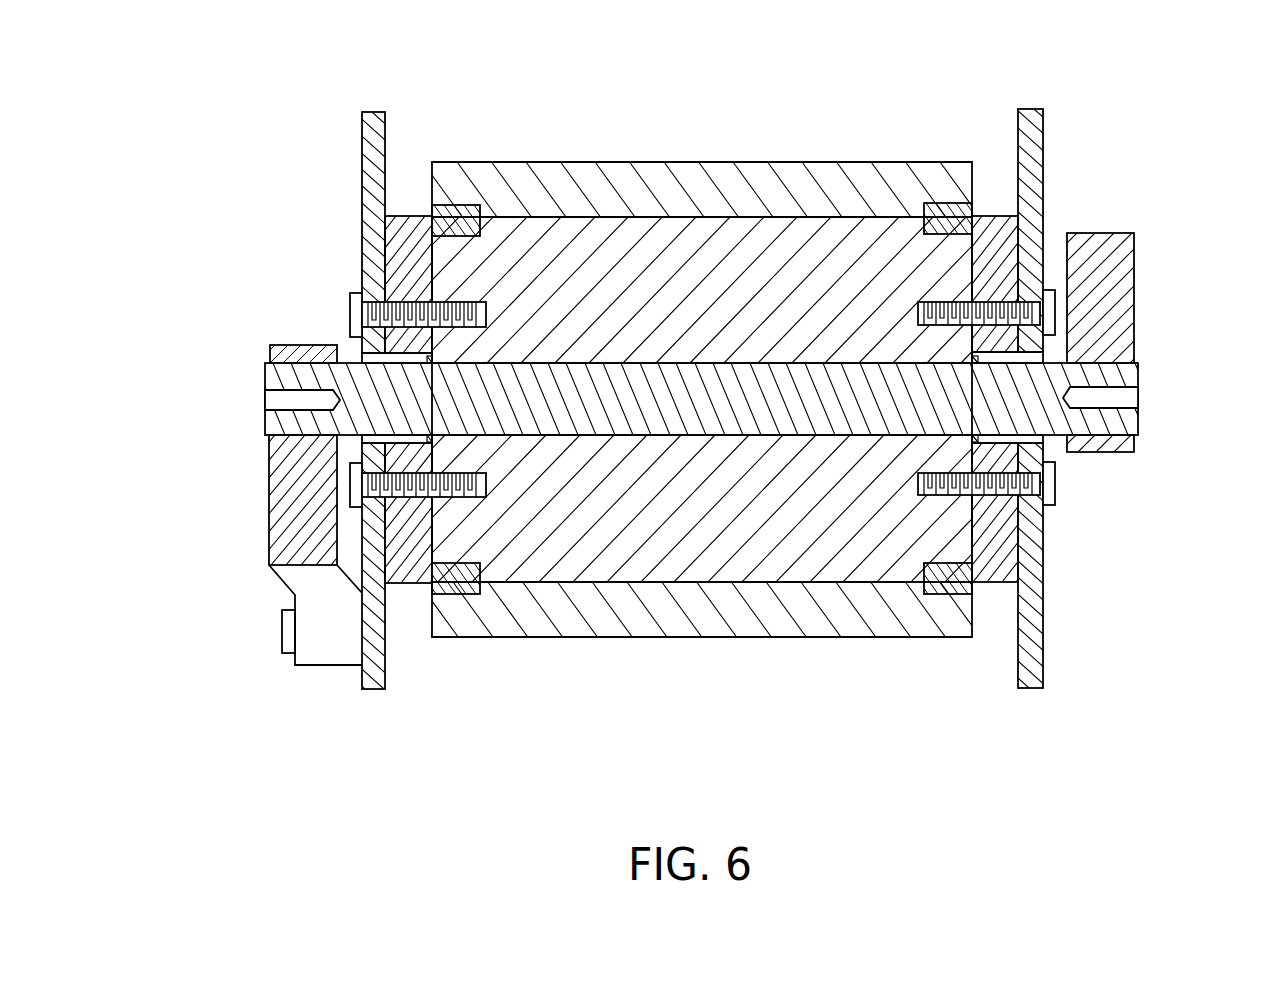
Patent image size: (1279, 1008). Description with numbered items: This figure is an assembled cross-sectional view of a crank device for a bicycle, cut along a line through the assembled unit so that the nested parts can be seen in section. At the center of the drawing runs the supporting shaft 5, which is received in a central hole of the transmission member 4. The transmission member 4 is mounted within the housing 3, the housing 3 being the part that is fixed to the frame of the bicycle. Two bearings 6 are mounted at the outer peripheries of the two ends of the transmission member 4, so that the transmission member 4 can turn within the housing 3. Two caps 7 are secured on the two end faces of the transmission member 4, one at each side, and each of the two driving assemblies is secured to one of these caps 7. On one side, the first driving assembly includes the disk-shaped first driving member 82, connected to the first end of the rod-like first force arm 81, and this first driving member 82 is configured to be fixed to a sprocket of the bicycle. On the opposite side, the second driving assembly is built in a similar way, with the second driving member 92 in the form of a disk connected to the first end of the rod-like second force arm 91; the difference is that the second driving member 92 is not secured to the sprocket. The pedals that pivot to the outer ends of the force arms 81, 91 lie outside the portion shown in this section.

The housing 3 is at (699, 340).
The transmission member 4 is at (702, 312).
The supporting shaft 5 is at (737, 388).
The bearings 6 is at (701, 331).
The caps 7 is at (706, 315).
The first force arm 81 is at (1068, 326).
The first driving member 82 is at (832, 367).
The second force arm 91 is at (296, 550).
The second driving member 92 is at (506, 370).